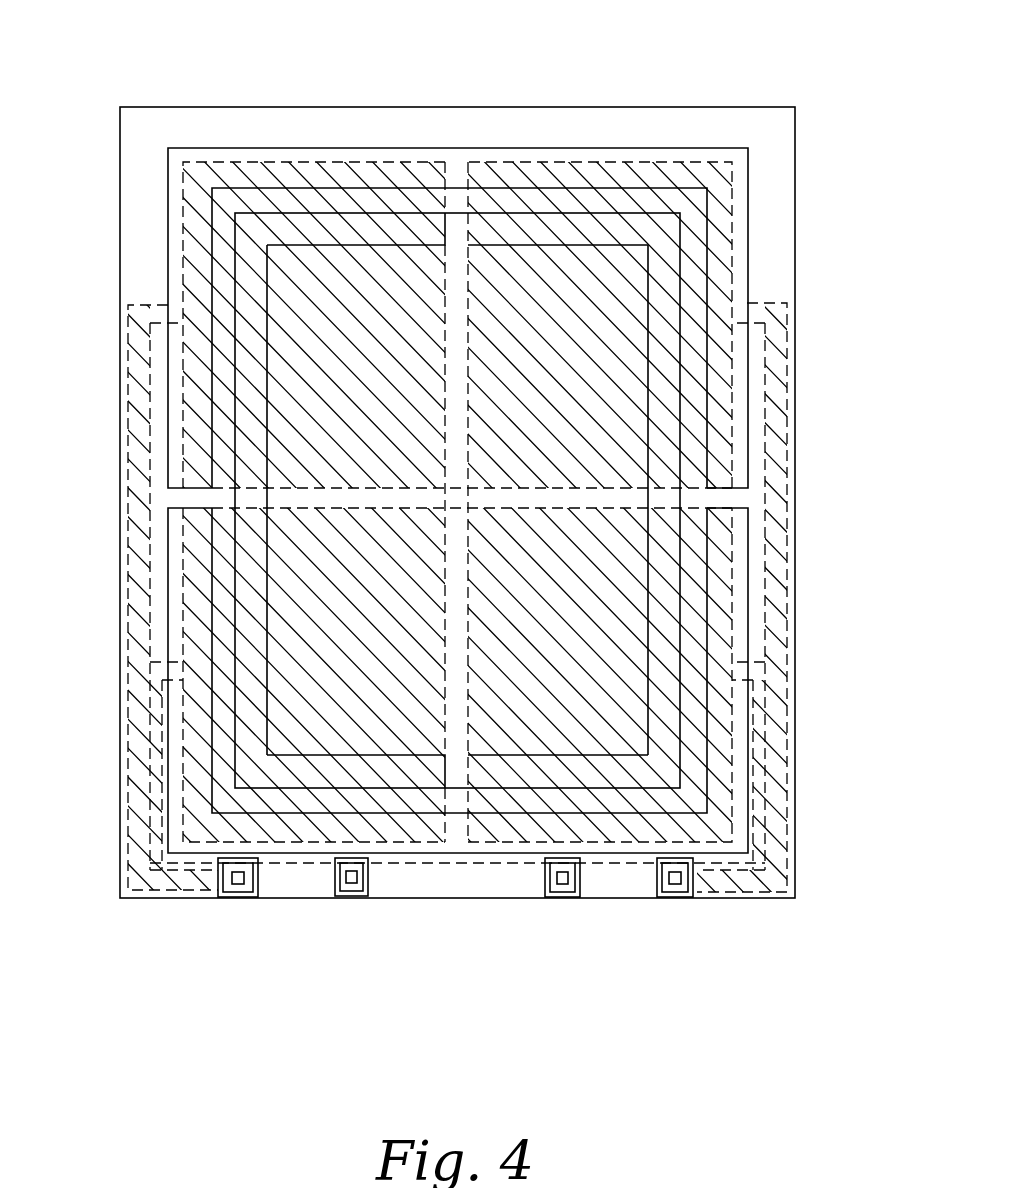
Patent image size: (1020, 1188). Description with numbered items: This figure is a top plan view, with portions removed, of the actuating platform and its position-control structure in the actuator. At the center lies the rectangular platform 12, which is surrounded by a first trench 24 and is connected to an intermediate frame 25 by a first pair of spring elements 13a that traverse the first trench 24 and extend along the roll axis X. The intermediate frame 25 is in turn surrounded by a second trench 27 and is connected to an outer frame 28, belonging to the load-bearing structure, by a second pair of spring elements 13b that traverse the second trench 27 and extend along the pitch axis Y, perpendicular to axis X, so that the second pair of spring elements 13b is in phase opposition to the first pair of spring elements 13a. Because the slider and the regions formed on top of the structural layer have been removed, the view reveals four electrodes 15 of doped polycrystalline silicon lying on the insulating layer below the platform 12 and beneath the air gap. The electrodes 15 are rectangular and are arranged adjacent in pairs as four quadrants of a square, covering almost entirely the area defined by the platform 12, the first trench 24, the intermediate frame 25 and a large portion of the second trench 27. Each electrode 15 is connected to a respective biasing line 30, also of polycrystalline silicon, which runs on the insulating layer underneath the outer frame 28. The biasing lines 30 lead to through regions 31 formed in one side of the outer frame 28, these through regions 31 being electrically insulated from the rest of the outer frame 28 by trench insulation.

The platform 12 is at (358, 418).
The first pair of spring elements 13a is at (458, 238).
The second pair of spring elements 13b is at (186, 497).
The electrodes 15 is at (405, 167).
The first trench 24 is at (296, 235).
The intermediate frame 25 is at (276, 195).
The second trench 27 is at (688, 153).
The outer frame 28 is at (782, 160).
The biasing lines 30 is at (126, 372).
The through regions 31 is at (334, 895).